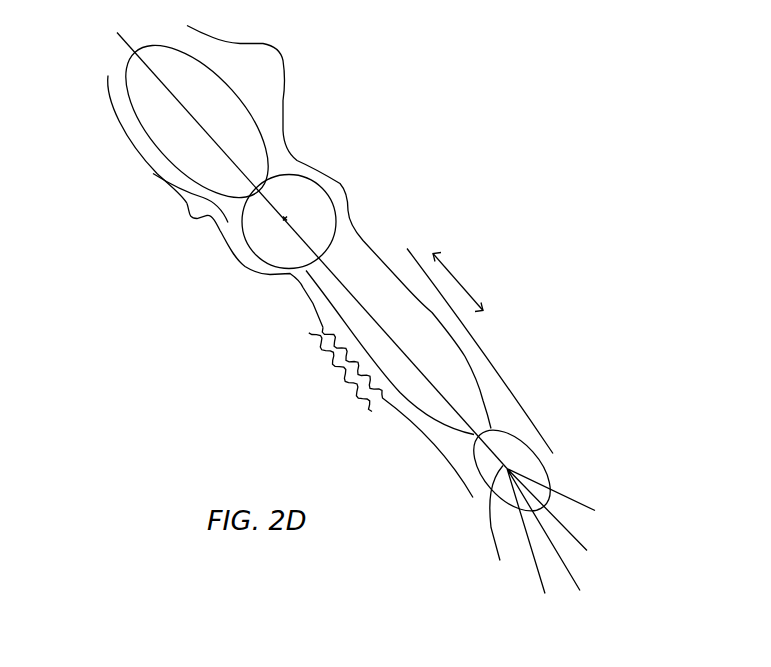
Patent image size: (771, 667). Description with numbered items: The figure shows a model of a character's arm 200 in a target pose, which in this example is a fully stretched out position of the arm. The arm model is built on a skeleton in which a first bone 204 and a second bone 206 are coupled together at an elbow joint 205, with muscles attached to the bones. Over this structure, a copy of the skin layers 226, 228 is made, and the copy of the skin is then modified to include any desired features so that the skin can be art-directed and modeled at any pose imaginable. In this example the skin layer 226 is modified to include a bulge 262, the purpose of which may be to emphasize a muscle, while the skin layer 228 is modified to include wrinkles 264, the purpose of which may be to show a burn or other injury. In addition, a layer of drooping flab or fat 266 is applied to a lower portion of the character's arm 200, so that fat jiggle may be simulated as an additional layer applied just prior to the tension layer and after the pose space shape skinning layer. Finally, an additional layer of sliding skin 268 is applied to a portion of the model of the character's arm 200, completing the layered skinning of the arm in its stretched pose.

The character's arm 200 is at (379, 131).
The first bone 204 is at (226, 153).
The elbow joint 205 is at (293, 216).
The second bone 206 is at (443, 397).
The skin layer 226 is at (215, 30).
The skin layer 228 is at (133, 145).
The bulge 262 is at (270, 57).
The wrinkles 264 is at (376, 413).
The drooping flab or fat 266 is at (193, 223).
The sliding skin 268 is at (410, 245).